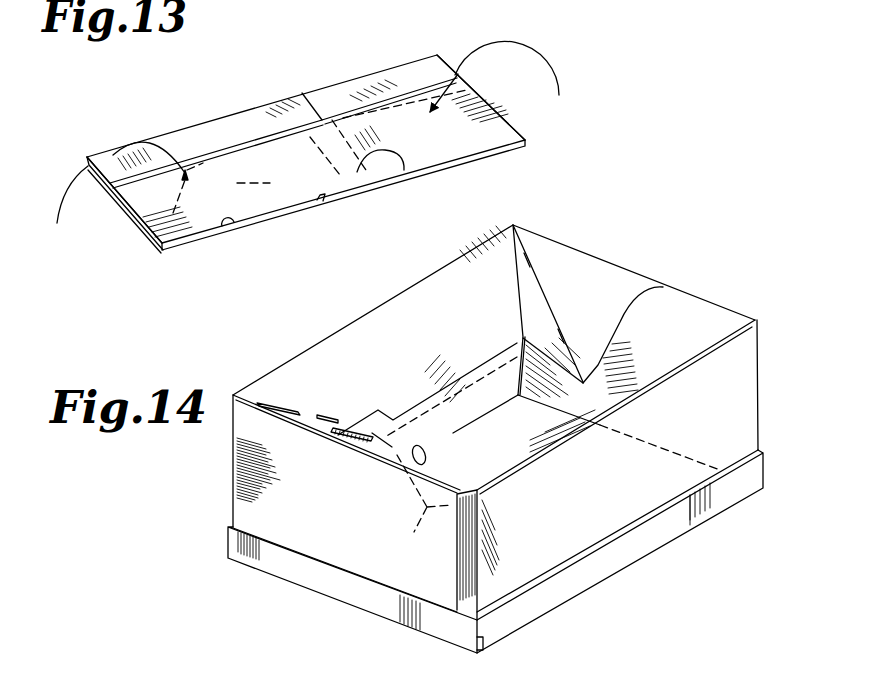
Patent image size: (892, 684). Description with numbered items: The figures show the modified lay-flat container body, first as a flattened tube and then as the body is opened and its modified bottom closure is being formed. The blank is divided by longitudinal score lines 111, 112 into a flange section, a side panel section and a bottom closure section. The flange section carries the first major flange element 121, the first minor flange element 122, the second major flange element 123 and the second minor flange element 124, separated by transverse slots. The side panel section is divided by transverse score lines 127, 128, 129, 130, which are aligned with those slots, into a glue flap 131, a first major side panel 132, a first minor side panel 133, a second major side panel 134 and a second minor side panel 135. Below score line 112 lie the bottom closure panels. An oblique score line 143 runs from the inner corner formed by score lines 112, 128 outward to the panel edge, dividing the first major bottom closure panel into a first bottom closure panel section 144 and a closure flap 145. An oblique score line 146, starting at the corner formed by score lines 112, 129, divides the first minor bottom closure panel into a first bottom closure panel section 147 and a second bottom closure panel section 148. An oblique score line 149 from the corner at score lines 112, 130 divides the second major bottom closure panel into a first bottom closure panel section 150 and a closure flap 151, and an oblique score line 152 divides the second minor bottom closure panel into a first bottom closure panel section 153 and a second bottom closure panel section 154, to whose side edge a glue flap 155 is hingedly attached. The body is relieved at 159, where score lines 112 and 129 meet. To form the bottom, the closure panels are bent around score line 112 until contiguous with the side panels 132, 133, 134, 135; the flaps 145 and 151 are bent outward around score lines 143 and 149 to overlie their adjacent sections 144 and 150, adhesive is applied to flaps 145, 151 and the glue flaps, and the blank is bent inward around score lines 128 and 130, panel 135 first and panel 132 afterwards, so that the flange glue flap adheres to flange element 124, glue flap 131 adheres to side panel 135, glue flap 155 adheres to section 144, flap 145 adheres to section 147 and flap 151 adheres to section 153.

In FIG. 14, the longitudinal score line 111 is at (665, 543).
In FIG. 13, the longitudinal score line 112 is at (228, 231).
In FIG. 14, the longitudinal score line 112 is at (407, 290).
In FIG. 13, the first major flange element 121 is at (236, 145).
In FIG. 14, the first major flange element 121 is at (610, 555).
In FIG. 14, the first minor flange element 122 is at (555, 390).
In FIG. 14, the second major flange element 123 is at (485, 392).
In FIG. 13, the second minor flange element 124 is at (432, 83).
In FIG. 14, the second minor flange element 124 is at (353, 585).
In FIG. 13, the transverse score line 127 is at (400, 176).
In FIG. 14, the transverse score line 127 is at (467, 593).
In FIG. 13, the transverse score line 128 is at (128, 212).
In FIG. 14, the transverse score line 128 is at (758, 332).
In FIG. 14, the transverse score line 129 is at (497, 355).
In FIG. 13, the transverse score line 130 is at (510, 121).
In FIG. 14, the transverse score line 130 is at (230, 493).
In FIG. 14, the glue flap 131 is at (498, 607).
In FIG. 13, the first major side panel 132 is at (163, 207).
In FIG. 14, the first major side panel 132 is at (605, 520).
In FIG. 14, the first minor side panel 133 is at (703, 430).
In FIG. 14, the second major side panel 134 is at (470, 423).
In FIG. 13, the second minor side panel 135 is at (465, 140).
In FIG. 14, the second minor side panel 135 is at (343, 519).
In FIG. 14, the oblique score line 143 is at (687, 362).
In FIG. 13, the first bottom closure panel section 144 is at (252, 169).
In FIG. 14, the first bottom closure panel section 144 is at (508, 462).
In FIG. 14, the closure flap 145 is at (680, 340).
In FIG. 14, the oblique score line 146 is at (551, 300).
In FIG. 14, the first bottom closure panel section 147 is at (613, 313).
In FIG. 14, the second bottom closure panel section 148 is at (552, 336).
In FIG. 14, the oblique score line 149 is at (306, 413).
In FIG. 14, the first bottom closure panel section 150 is at (433, 346).
In FIG. 14, the closure flap 151 is at (347, 427).
In FIG. 14, the oblique score line 152 is at (405, 466).
In FIG. 14, the first bottom closure panel section 153 is at (377, 440).
In FIG. 14, the second bottom closure panel section 154 is at (453, 552).
In FIG. 13, the glue flap 155 is at (344, 188).
In FIG. 13, the relief 159 is at (322, 204).